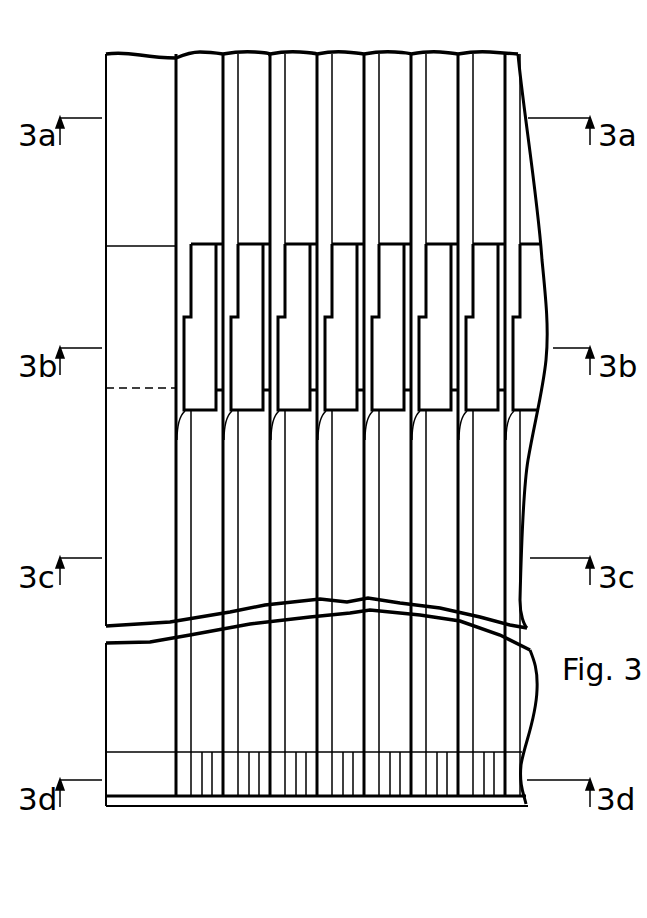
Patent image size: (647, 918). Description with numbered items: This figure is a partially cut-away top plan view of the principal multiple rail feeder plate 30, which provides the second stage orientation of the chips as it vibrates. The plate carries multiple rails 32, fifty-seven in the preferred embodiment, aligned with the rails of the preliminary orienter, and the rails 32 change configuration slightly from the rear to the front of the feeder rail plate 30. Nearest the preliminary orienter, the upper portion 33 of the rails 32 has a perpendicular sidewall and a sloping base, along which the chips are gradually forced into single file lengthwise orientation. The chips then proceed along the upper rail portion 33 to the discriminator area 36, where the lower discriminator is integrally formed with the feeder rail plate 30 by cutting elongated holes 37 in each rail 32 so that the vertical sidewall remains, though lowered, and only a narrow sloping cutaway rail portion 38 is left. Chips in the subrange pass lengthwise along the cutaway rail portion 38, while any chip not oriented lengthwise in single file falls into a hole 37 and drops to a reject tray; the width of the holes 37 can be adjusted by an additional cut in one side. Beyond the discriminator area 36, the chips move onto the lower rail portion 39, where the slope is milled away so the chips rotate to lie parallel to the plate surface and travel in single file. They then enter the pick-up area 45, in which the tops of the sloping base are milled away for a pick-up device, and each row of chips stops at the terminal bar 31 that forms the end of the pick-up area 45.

The feeder rail plate 30 is at (488, 213).
The terminal bar 31 is at (140, 802).
The rails 32 is at (195, 92).
The upper portion of rails 33 is at (495, 88).
The discriminator area 36 is at (513, 287).
The elongated holes 37 is at (248, 268).
The cutaway rail portion 38 is at (372, 270).
The lower rail portion 39 is at (495, 512).
The pick-up area 45 is at (497, 777).